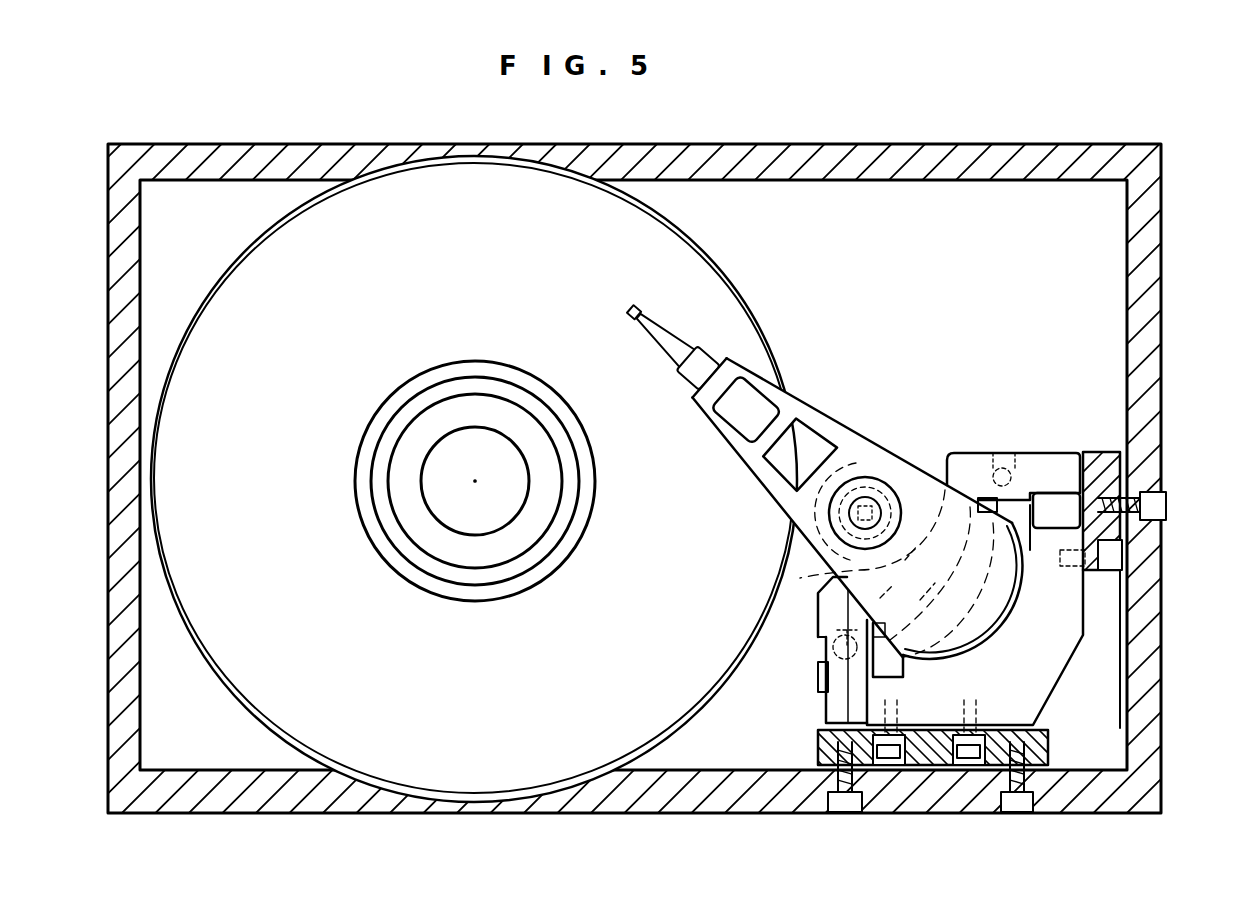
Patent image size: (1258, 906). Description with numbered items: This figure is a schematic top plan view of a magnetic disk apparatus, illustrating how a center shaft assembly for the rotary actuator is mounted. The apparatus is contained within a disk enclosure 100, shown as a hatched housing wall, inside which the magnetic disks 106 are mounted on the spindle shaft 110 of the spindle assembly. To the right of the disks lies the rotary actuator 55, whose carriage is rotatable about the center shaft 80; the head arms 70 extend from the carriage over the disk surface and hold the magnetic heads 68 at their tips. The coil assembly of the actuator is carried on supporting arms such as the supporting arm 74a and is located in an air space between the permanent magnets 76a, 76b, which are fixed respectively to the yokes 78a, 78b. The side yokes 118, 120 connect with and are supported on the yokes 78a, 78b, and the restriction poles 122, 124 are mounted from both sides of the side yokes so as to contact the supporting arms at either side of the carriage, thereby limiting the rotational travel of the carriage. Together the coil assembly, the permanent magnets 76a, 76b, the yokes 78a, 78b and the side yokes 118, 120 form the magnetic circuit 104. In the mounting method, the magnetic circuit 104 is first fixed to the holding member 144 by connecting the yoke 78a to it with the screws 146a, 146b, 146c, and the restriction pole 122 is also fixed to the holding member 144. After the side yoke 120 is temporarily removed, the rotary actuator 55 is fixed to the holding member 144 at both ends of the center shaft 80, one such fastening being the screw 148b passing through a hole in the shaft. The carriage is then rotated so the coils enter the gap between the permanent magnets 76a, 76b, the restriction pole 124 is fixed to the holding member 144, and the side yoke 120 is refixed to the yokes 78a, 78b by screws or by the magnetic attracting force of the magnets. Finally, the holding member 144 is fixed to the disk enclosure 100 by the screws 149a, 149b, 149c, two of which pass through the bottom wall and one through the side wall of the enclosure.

The disk enclosure 100 is at (927, 146).
The magnetic disks 106 is at (543, 195).
The spindle shaft 110 is at (442, 488).
The magnetic heads 68 is at (641, 306).
The head arms 70 is at (790, 398).
The center shaft 80 is at (883, 492).
The screw 148b is at (868, 495).
The rotary actuator 55 is at (928, 450).
The permanent magnet 76a is at (988, 612).
The permanent magnet 76b is at (845, 578).
The side yoke 120 is at (972, 456).
The restriction pole 124 is at (1010, 455).
The supporting arm 74a is at (1088, 522).
The yoke 78a is at (1085, 620).
The yoke 78b is at (850, 600).
The magnetic circuit 104 is at (1100, 703).
The side yoke 118 is at (846, 700).
The restriction pole 122 is at (832, 662).
The holding member 144 is at (830, 758).
The screw 146a is at (890, 704).
The screw 146b is at (970, 705).
The screw 146c is at (1068, 566).
The screw 149a is at (852, 813).
The screw 149b is at (1026, 813).
The screw 149c is at (1165, 507).